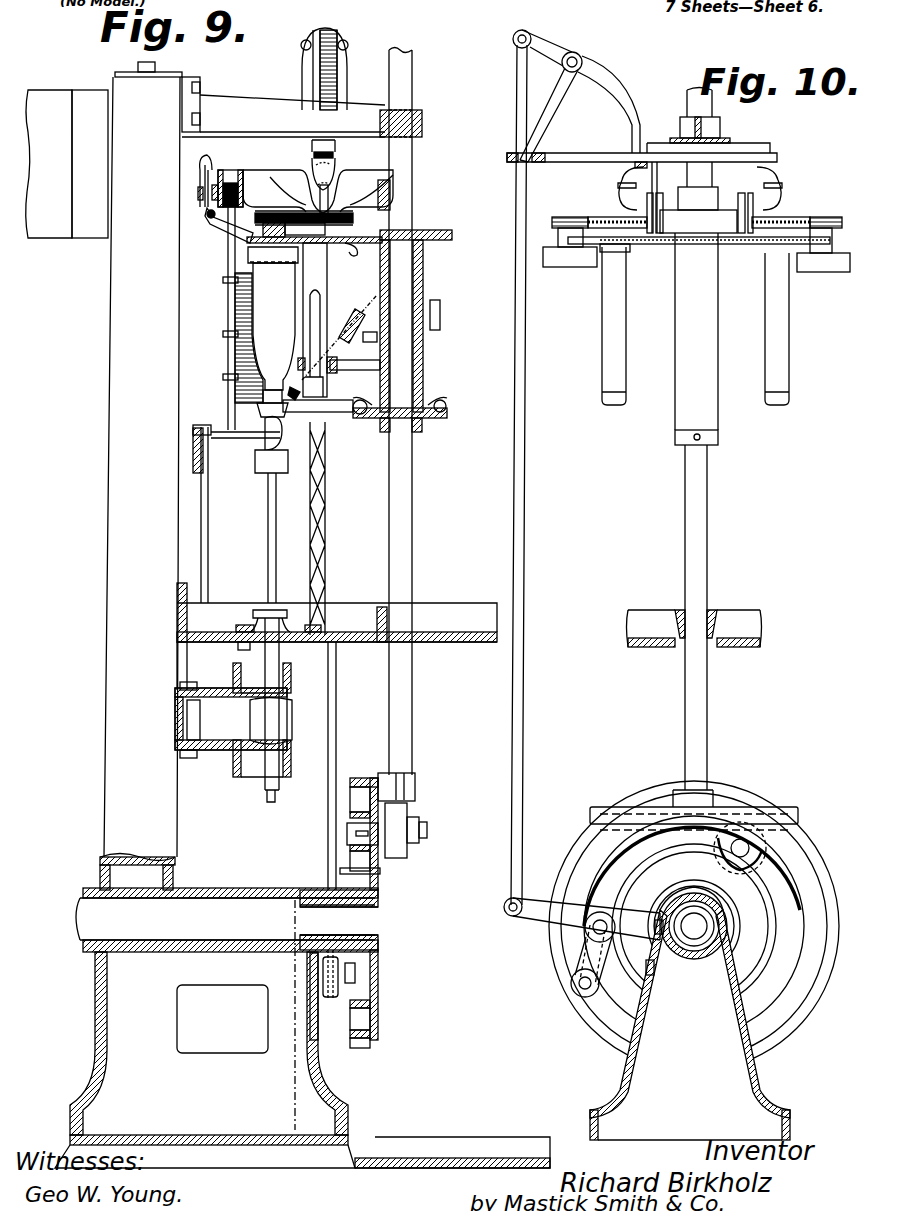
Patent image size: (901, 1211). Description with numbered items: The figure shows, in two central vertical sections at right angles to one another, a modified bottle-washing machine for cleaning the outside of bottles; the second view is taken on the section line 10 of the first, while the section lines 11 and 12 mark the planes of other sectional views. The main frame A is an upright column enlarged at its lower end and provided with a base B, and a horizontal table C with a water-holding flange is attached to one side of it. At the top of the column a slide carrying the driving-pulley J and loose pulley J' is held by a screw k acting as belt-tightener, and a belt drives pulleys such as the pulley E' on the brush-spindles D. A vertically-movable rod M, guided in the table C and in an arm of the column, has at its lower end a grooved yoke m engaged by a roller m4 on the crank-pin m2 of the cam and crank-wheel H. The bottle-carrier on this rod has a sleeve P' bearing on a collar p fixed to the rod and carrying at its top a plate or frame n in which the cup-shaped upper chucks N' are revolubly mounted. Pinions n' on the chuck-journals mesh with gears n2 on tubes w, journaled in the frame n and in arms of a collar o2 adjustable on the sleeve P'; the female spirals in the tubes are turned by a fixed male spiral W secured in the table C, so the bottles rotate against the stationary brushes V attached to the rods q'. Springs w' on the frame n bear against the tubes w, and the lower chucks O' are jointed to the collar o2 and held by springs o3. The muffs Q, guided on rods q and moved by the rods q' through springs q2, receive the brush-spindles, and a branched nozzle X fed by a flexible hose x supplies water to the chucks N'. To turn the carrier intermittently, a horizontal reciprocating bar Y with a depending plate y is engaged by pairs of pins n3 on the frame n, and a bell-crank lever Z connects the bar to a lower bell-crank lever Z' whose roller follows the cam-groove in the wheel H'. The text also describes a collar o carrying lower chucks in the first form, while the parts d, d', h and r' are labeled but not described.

In FIG. 9, the main frame A is at (216, 620).
In FIG. 10, the main frame A is at (690, 1013).
In FIG. 9, the base B is at (427, 1140).
In FIG. 9, the horizontal table C is at (352, 630).
In FIG. 10, the horizontal table C is at (648, 610).
In FIG. 9, the brush-spindles D is at (268, 537).
In FIG. 9, the brush-spindle pulley E' is at (233, 720).
In FIG. 9, the cam and crank-wheel H is at (357, 913).
In FIG. 10, the cam-groove wheel H' is at (570, 968).
In FIG. 9, the driving-pulley J is at (49, 164).
In FIG. 9, the loose pulley J' is at (90, 164).
In FIG. 9, the vertically-movable rod M is at (412, 720).
In FIG. 10, the vertically-movable rod M is at (703, 537).
In FIG. 9, the upper chucks N' is at (246, 249).
In FIG. 10, the upper chucks N' is at (570, 273).
In FIG. 9, the lower chucks O' is at (284, 410).
In FIG. 9, the sleeve P' is at (370, 337).
In FIG. 10, the sleeve P' is at (683, 331).
In FIG. 9, the muffs Q is at (268, 462).
In FIG. 9, the stationary brushes V is at (235, 353).
In FIG. 9, the male spiral W is at (325, 500).
In FIG. 9, the branched nozzle X is at (206, 214).
In FIG. 9, the horizontal reciprocating bar Y is at (324, 135).
In FIG. 10, the horizontal reciprocating bar Y is at (605, 160).
In FIG. 9, the bell-crank lever Z is at (338, 69).
In FIG. 10, the bell-crank lever Z is at (546, 467).
In FIG. 9, the lower bell-crank lever Z' is at (307, 987).
In FIG. 10, the lower bell-crank lever Z' is at (579, 923).
In FIG. 9, the shaft d is at (248, 710).
In FIG. 9, the collar d' is at (261, 607).
In FIG. 9, the hub/bar h is at (340, 870).
In FIG. 10, the hub/bar h is at (740, 932).
In FIG. 9, the screw k is at (138, 65).
In FIG. 9, the yoke m is at (415, 800).
In FIG. 10, the yoke m is at (795, 812).
In FIG. 9, the crank-pin m2 is at (333, 790).
In FIG. 10, the crank-pin m2 is at (738, 858).
In FIG. 9, the roller m4 is at (395, 855).
In FIG. 9, the plate or frame n is at (349, 312).
In FIG. 10, the plate or frame n is at (695, 250).
In FIG. 9, the pinions n' is at (304, 211).
In FIG. 10, the pinions n' is at (693, 211).
In FIG. 9, the gears n2 is at (350, 213).
In FIG. 10, the gears n2 is at (786, 210).
In FIG. 9, the pins n3 is at (335, 185).
In FIG. 10, the pins n3 is at (762, 200).
In FIG. 9, the collar o is at (362, 345).
In FIG. 9, the collar o2 is at (423, 353).
In FIG. 9, the springs o3 is at (352, 322).
In FIG. 9, the collar p is at (420, 430).
In FIG. 10, the collar p is at (718, 440).
In FIG. 9, the guide-rods q is at (236, 514).
In FIG. 9, the vertical rods q' is at (216, 318).
In FIG. 9, the springs q2 is at (243, 185).
In FIG. 10, the block r' is at (823, 278).
In FIG. 9, the tubes w is at (315, 320).
In FIG. 10, the tubes w is at (679, 326).
In FIG. 9, the springs w' is at (355, 256).
In FIG. 9, the flexible hose x is at (198, 170).
In FIG. 9, the depending plate y is at (315, 175).
In FIG. 10, the depending plate y is at (658, 178).
In FIG. 9, the section line 10 is at (314, 26).
In FIG. 9, the section line 11 is at (445, 151).
In FIG. 9, the section line 12 is at (460, 292).